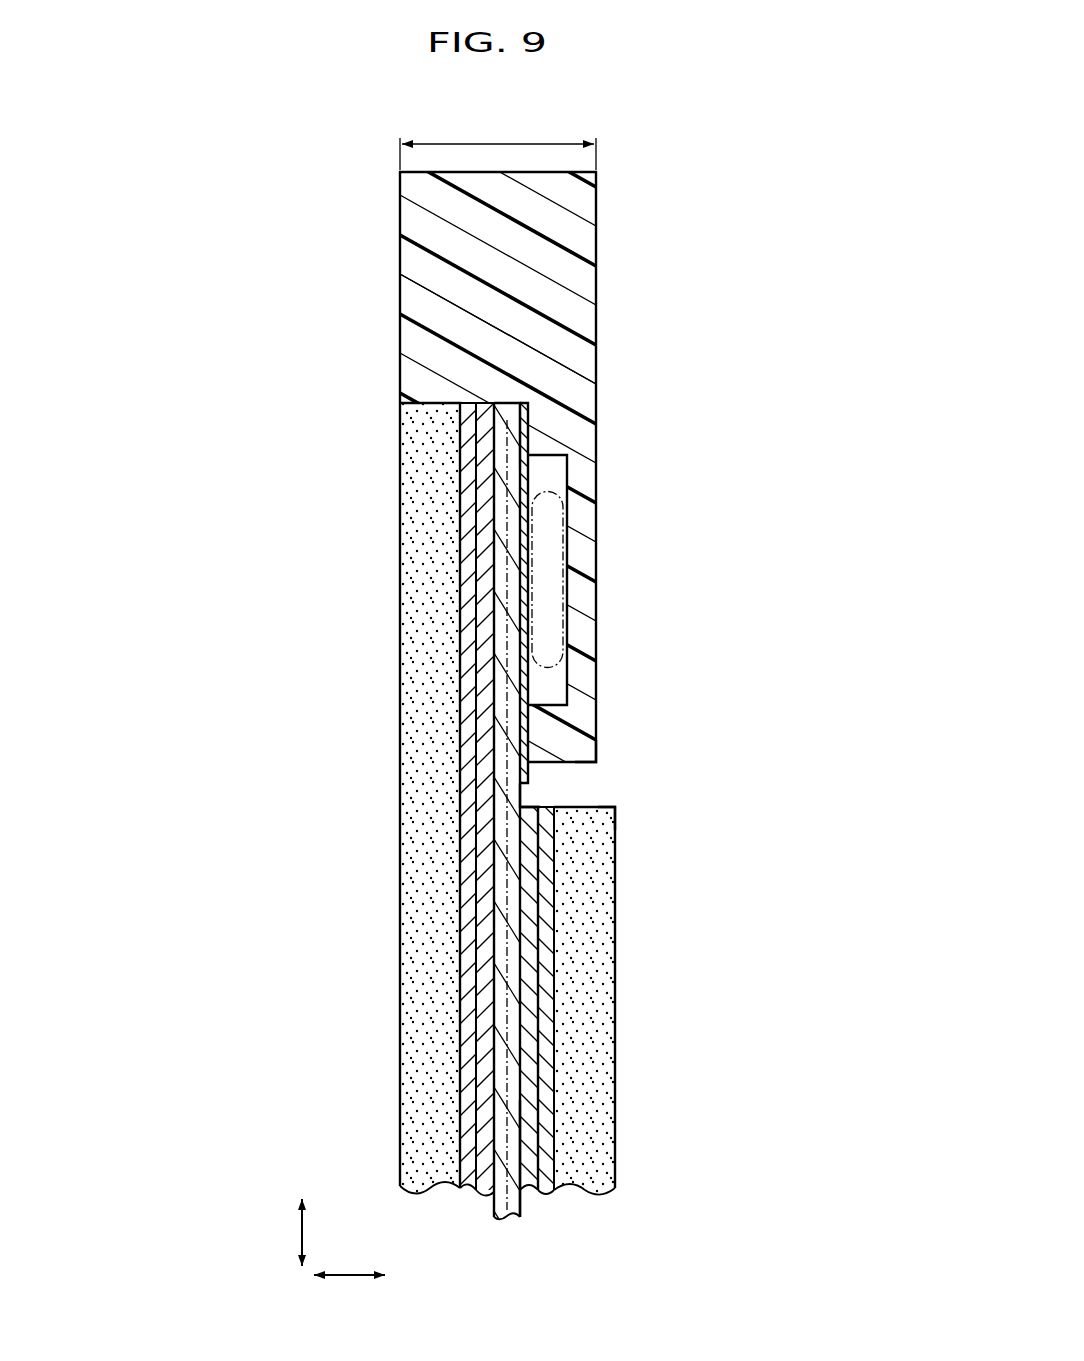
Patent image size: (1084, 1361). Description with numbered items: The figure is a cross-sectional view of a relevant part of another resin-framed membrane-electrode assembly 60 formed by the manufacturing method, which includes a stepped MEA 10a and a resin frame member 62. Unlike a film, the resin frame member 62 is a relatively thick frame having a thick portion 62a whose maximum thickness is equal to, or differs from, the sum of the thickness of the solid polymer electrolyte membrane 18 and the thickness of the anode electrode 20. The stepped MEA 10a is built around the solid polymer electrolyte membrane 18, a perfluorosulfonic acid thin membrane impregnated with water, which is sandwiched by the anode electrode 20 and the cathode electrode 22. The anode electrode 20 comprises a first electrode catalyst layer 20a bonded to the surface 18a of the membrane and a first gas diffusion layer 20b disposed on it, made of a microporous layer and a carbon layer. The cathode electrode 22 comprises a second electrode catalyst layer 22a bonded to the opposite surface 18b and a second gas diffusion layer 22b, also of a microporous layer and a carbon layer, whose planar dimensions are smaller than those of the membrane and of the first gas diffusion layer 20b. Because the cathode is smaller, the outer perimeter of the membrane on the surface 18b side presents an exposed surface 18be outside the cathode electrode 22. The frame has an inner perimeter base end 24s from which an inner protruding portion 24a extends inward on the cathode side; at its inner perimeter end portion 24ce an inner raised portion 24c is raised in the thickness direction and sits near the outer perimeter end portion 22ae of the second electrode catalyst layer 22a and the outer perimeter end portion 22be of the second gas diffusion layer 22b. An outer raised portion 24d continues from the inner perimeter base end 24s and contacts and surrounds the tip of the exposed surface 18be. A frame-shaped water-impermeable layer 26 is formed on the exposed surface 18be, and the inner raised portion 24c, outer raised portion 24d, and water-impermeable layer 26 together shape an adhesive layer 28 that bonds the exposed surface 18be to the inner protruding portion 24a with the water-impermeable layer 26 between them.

The resin-framed membrane-electrode assembly 60 is at (632, 97).
The resin frame member 62 is at (598, 208).
The thick portion 62a is at (425, 298).
The stepped MEA 10a is at (397, 455).
The outer raised portion 24d is at (553, 422).
The inner protruding portion 24a is at (587, 602).
The inner raised portion 24c is at (543, 730).
The edge of bottom portion 24ce is at (588, 770).
The inner perimeter base end 24s is at (548, 455).
The water-impermeable layer 26 is at (521, 531).
The adhesive layer 28 is at (557, 628).
The exposed surface 18be is at (528, 437).
The solid polymer electrolyte membrane 18 is at (507, 1222).
The surface 18a is at (494, 1200).
The surface 18b is at (520, 1200).
The anode electrode 20 is at (296, 955).
The first electrode catalyst layer 20a is at (487, 973).
The first gas diffusion layer 20b is at (397, 1027).
The cathode electrode 22 is at (720, 958).
The second electrode catalyst layer 22a is at (533, 973).
The outer perimeter end portion 22ae is at (520, 806).
The second gas diffusion layer 22b is at (616, 1027).
The outer perimeter end portion 22be is at (598, 806).